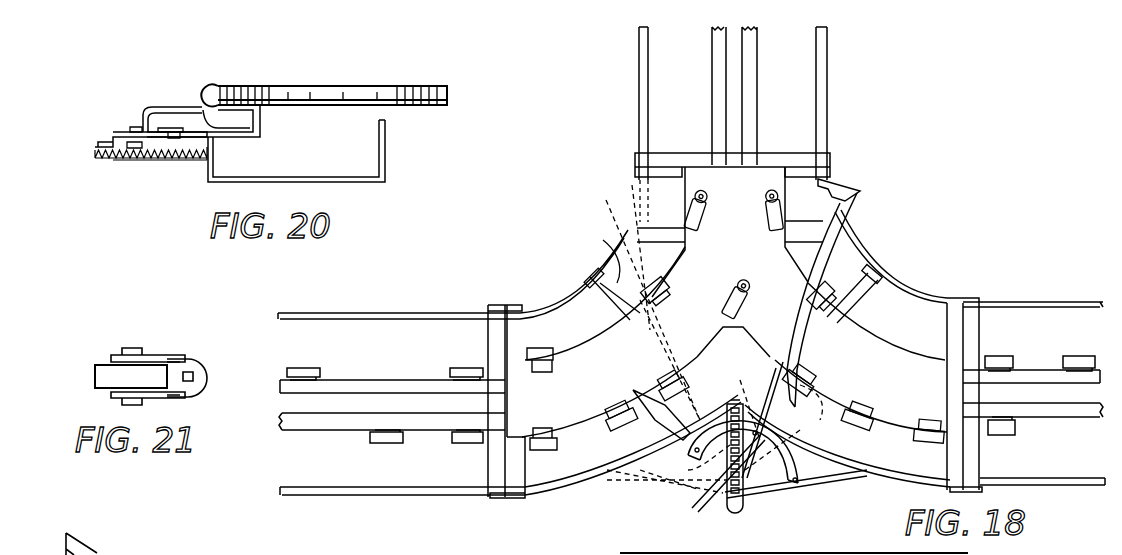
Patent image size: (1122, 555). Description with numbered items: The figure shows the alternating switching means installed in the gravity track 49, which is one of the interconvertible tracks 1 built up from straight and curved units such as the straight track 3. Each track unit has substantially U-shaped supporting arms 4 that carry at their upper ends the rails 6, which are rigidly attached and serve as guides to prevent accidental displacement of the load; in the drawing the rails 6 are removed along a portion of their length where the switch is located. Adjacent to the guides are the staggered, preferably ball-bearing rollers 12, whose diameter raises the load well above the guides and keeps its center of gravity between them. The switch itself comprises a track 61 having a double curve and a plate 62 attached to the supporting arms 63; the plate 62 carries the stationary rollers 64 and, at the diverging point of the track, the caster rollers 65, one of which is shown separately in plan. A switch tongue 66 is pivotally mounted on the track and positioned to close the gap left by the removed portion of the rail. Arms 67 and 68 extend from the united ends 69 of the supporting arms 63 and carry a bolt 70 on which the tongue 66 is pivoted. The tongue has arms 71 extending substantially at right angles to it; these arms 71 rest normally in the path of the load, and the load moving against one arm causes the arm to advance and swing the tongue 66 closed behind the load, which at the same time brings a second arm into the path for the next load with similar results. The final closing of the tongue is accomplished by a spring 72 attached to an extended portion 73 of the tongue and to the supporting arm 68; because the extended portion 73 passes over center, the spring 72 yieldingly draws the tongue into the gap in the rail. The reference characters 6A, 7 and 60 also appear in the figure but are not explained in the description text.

In FIG. 18, the interconvertible tracks 1 is at (691, 371).
In FIG. 18, the straight track 3 is at (1045, 305).
In FIG. 18, the supporting arms 4 is at (968, 342).
In FIG. 18, the rails 6 is at (1075, 480).
In FIG. 18, the curved inner rail 6A is at (557, 430).
In FIG. 18, the rail 7 is at (1075, 425).
In FIG. 18, the rollers 12 is at (1000, 432).
In FIG. 18, the gravity track 49 is at (724, 344).
In FIG. 18, the curved outer rail 60 is at (902, 280).
In FIG. 18, the track 61 is at (837, 265).
In FIG. 18, the plate 62 is at (730, 262).
In FIG. 18, the supporting arms 63 is at (603, 238).
In FIG. 21, the stationary rollers 64 is at (151, 376).
In FIG. 18, the stationary rollers 64 is at (764, 354).
In FIG. 18, the caster rollers 65 is at (743, 312).
In FIG. 18, the switch tongue 66 is at (622, 205).
In FIG. 20, the arm 67 is at (160, 108).
In FIG. 18, the arm 67 is at (752, 500).
In FIG. 20, the arm 68 is at (208, 183).
In FIG. 20, the united ends 69 is at (205, 93).
In FIG. 18, the united ends 69 is at (798, 418).
In FIG. 20, the bolt 70 is at (135, 127).
In FIG. 18, the bolt 70 is at (727, 493).
In FIG. 20, the arms 71 is at (170, 137).
In FIG. 18, the arms 71 is at (820, 498).
In FIG. 20, the spring 72 is at (137, 160).
In FIG. 18, the spring 72 is at (690, 487).
In FIG. 20, the extended portion 73 is at (95, 147).
In FIG. 18, the extended portion 73 is at (752, 553).